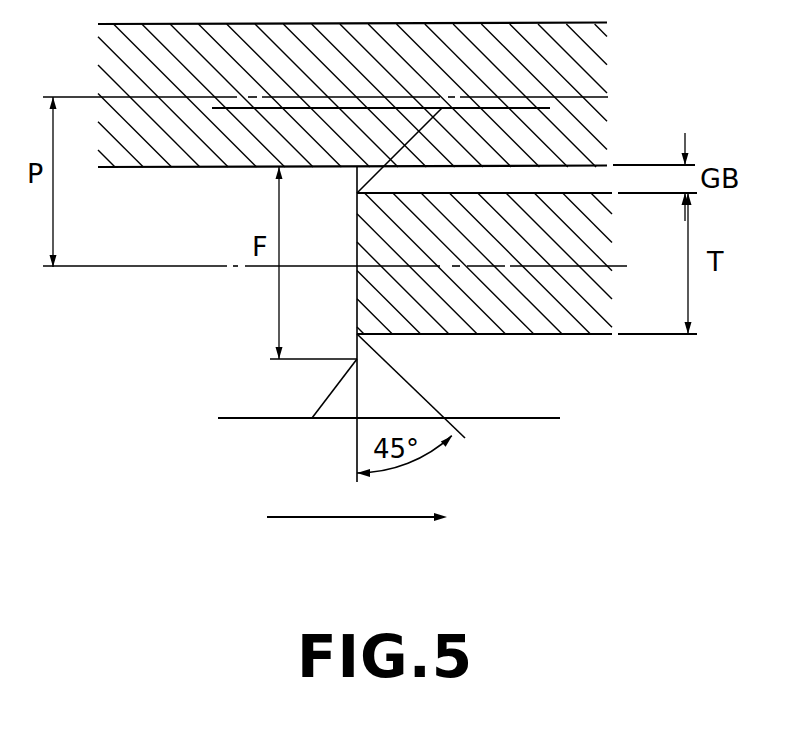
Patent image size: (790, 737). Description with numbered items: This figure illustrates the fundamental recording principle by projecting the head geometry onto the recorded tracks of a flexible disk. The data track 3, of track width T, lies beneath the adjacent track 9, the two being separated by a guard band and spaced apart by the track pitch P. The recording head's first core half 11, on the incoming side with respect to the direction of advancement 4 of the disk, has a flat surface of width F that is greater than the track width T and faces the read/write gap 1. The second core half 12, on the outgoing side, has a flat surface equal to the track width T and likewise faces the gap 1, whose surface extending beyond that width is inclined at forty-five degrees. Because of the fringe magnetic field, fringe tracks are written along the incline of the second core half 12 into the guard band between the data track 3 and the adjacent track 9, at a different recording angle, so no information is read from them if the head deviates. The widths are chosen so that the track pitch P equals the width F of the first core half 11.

The adjacent track 9 is at (590, 63).
The data track 3 is at (588, 315).
The read/write gap 1 is at (357, 297).
The first core half 11 is at (255, 400).
The second core half 12 is at (520, 402).
The direction of advancement 4 is at (318, 520).